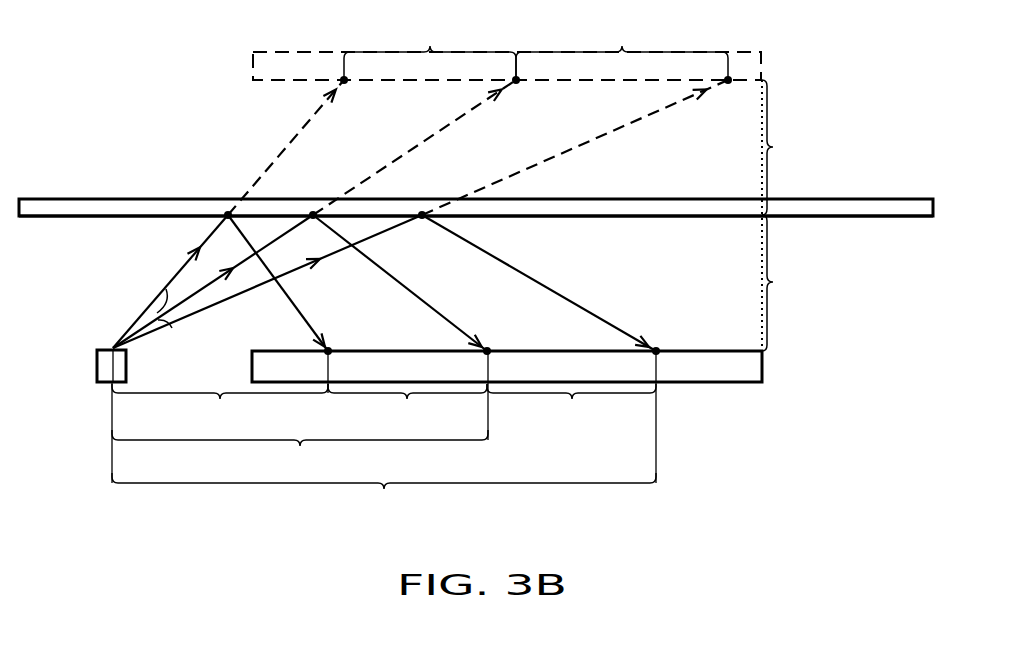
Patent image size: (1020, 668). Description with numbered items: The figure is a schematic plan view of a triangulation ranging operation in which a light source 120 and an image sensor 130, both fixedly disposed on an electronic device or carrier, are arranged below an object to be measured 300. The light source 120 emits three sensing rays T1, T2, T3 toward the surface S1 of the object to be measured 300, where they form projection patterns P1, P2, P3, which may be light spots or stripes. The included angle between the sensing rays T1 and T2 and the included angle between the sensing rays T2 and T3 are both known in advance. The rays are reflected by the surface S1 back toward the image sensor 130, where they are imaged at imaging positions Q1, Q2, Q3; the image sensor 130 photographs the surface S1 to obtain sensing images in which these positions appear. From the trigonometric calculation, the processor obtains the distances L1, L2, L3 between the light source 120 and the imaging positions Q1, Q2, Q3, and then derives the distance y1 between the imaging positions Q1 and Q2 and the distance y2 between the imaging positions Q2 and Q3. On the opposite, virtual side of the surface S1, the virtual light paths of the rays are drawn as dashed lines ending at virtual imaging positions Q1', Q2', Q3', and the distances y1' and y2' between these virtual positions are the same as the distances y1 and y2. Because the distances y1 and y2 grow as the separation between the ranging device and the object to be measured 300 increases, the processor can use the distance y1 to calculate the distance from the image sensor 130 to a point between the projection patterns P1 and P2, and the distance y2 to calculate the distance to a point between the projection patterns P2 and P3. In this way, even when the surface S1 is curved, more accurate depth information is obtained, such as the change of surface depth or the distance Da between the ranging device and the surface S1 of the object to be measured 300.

The light source 120 is at (100, 364).
The image sensor 130 is at (757, 366).
The object to be measured 300 is at (886, 206).
The surface S1 is at (107, 219).
The projection pattern P1 is at (226, 209).
The projection pattern P2 is at (311, 209).
The projection pattern P3 is at (420, 209).
The sensing ray T1 is at (170, 281).
The sensing ray T2 is at (213, 281).
The sensing ray T3 is at (267, 281).
The imaging position Q1 is at (290, 285).
The imaging position Q2 is at (413, 285).
The imaging position Q3 is at (553, 285).
The virtual imaging position Q1' is at (303, 145).
The virtual imaging position Q2' is at (431, 145).
The virtual imaging position Q3' is at (581, 145).
The distance Da is at (786, 215).
The distance L1 is at (220, 408).
The distance L2 is at (300, 455).
The distance L3 is at (384, 498).
The distance y1 is at (407, 408).
The distance y2 is at (571, 408).
The distance y1' is at (430, 46).
The distance y2' is at (622, 46).